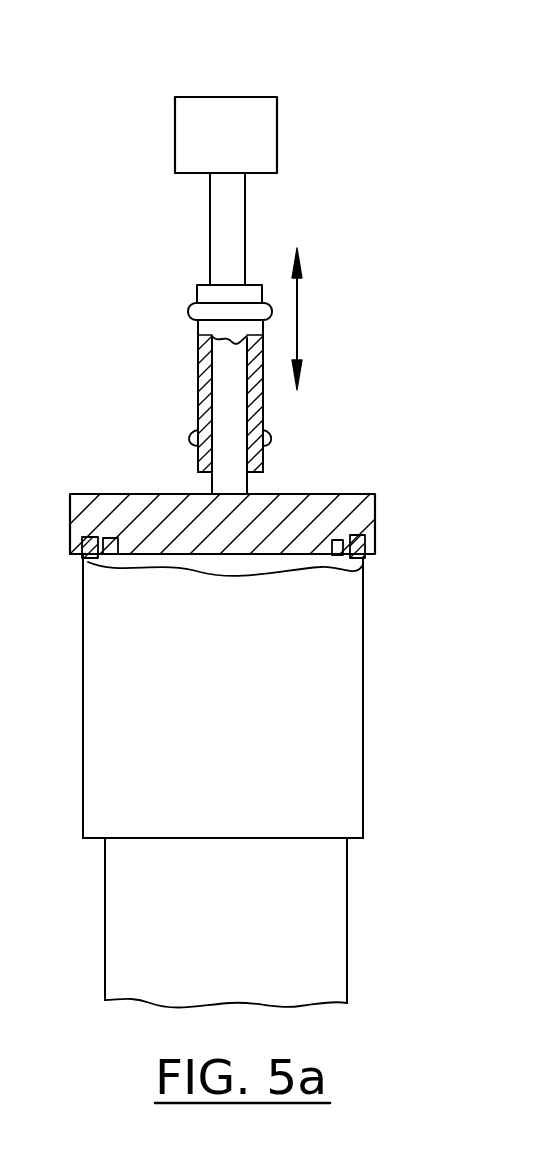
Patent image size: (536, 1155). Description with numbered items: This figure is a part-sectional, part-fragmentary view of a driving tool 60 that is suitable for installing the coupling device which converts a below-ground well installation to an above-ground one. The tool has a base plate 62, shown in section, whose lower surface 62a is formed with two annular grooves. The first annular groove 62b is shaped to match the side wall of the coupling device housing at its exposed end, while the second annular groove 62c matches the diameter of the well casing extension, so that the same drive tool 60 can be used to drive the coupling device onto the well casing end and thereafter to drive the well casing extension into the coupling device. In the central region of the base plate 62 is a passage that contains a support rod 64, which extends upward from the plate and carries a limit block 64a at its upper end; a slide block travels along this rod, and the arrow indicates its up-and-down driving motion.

The driving tool 60 is at (394, 298).
The base plate 62 is at (303, 494).
The lower surface 62a is at (356, 573).
The first annular groove 62b is at (373, 526).
The second annular groove 62c is at (340, 538).
The support rod 64 is at (222, 233).
The limit block 64a is at (212, 110).